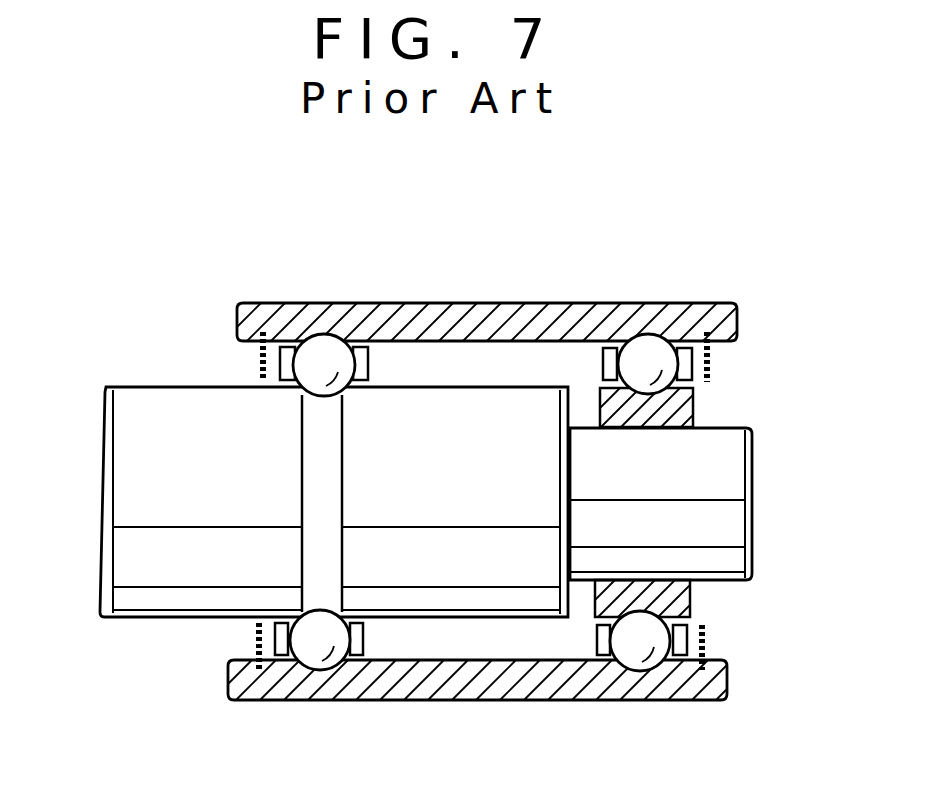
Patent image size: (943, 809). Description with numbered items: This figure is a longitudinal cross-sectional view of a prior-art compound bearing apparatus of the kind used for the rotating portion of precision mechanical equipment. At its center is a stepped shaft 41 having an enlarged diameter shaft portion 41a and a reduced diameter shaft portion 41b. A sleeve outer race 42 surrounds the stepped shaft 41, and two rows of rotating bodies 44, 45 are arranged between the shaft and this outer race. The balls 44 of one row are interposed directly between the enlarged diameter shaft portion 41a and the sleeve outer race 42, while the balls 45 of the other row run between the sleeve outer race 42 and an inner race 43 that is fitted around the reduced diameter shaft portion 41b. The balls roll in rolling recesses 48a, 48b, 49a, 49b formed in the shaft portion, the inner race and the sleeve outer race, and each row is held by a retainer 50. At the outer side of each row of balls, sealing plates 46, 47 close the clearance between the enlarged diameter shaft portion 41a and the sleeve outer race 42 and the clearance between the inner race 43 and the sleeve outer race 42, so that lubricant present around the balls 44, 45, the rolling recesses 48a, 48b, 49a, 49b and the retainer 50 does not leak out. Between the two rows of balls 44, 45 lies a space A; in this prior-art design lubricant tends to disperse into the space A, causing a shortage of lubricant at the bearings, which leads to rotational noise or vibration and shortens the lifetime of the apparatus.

The stepped shaft 41 is at (436, 510).
The enlarged diameter shaft portion 41a is at (130, 467).
The reduced diameter shaft portion 41b is at (733, 484).
The sleeve outer race 42 is at (527, 303).
The inner race 43 is at (677, 408).
The rotating bodies 44 is at (310, 350).
The rotating bodies 45 is at (632, 338).
The sealing plate 46 is at (262, 358).
The sealing plate 47 is at (712, 370).
The rolling recess 48a is at (305, 552).
The rolling recess 48b is at (328, 343).
The rolling recess 49a is at (650, 374).
The rolling recess 49b is at (648, 342).
The retainer 50 is at (352, 665).
The space A is at (472, 365).